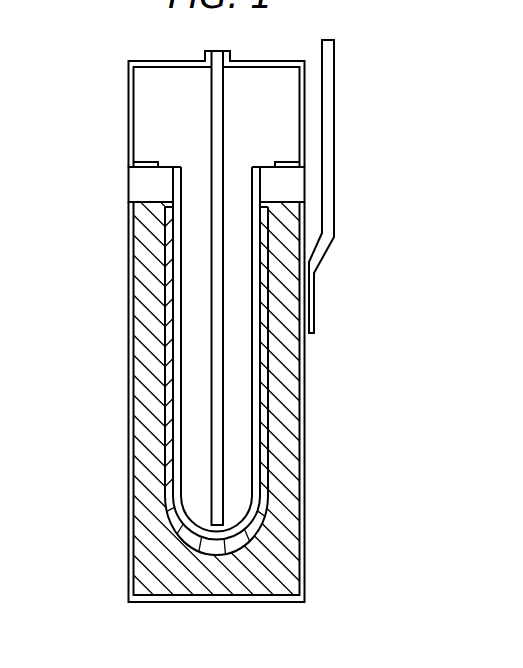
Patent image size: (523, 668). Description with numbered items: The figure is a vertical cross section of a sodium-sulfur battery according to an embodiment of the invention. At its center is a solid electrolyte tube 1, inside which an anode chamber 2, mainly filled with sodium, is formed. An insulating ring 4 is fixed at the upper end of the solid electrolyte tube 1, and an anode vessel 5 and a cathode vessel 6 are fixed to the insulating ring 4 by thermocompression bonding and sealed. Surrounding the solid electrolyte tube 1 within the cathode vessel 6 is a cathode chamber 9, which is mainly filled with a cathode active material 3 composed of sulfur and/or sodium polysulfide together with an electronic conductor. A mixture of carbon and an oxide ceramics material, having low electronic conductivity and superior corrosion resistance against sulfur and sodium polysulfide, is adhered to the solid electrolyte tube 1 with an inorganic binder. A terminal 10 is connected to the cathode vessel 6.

The solid electrolyte tube 1 is at (266, 307).
The anode chamber 2 is at (193, 455).
The cathode active material 3 is at (272, 434).
The insulating ring 4 is at (128, 189).
The anode vessel 5 is at (128, 106).
The cathode vessel 6 is at (128, 340).
The cathode chamber 9 is at (150, 240).
The terminal 10 is at (337, 65).